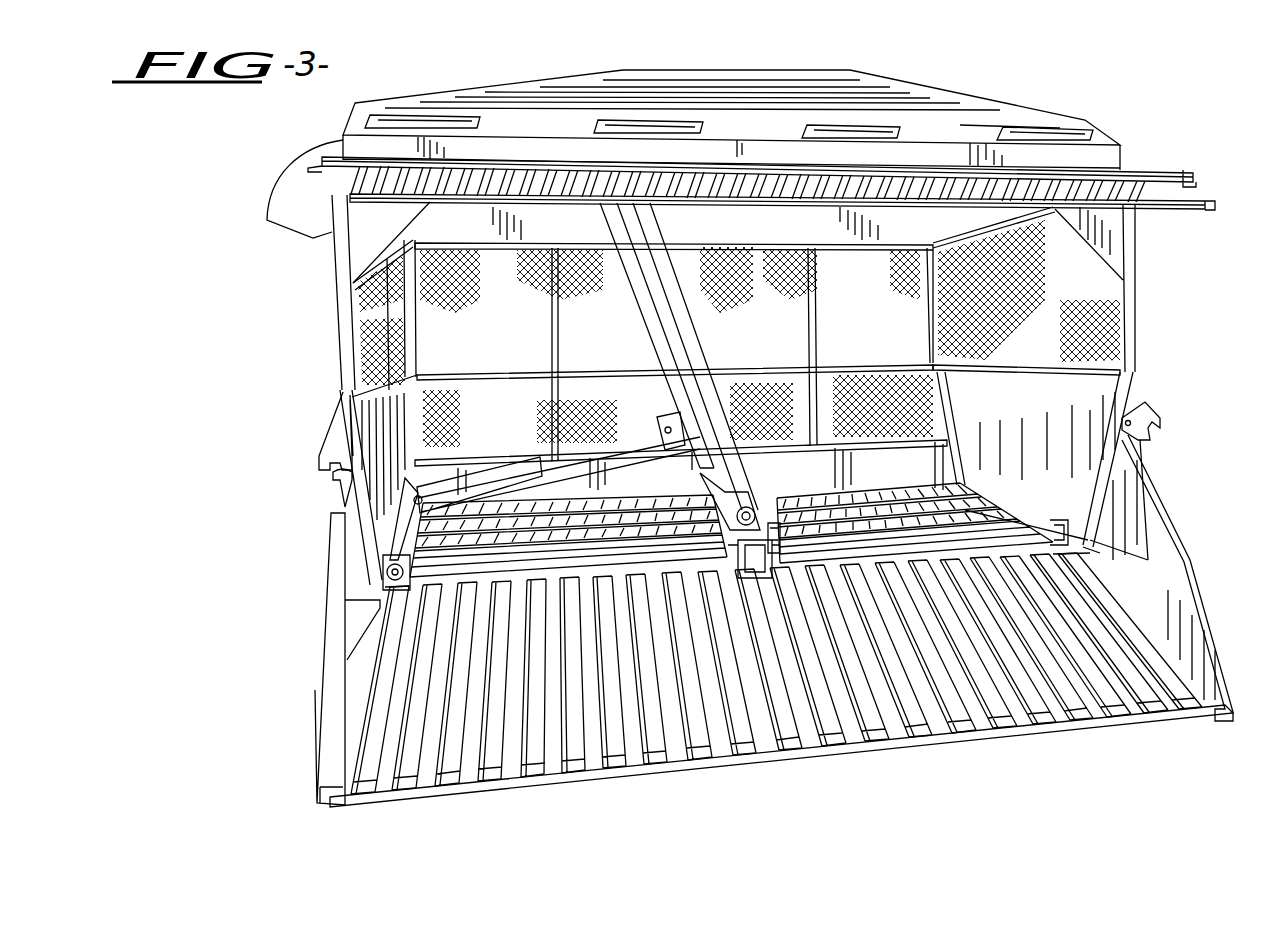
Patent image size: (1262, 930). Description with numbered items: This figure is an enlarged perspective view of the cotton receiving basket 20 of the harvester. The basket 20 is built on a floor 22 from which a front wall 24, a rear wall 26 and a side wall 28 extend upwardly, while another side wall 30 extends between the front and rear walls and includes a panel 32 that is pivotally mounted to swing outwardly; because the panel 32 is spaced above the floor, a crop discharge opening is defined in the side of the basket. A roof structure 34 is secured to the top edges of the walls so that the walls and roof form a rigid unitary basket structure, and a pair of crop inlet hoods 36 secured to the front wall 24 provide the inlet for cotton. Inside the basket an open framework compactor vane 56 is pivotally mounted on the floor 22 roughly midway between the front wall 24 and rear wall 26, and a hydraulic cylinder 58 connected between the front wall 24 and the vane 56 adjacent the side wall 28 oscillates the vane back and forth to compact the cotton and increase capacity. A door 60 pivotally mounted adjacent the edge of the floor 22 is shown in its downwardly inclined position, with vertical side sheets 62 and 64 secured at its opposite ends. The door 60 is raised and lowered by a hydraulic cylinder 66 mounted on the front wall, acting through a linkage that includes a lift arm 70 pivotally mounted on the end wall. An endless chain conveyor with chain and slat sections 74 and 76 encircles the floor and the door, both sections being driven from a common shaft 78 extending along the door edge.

The cotton receiving basket 20 is at (1156, 332).
The floor 22 is at (1014, 525).
The front wall 24 is at (356, 345).
The rear wall 26 is at (992, 409).
The side wall 28 is at (750, 344).
The side wall 30 is at (1097, 162).
The panel 32 is at (1197, 177).
The roof structure 34 is at (898, 104).
The crop inlet hoods 36 is at (283, 204).
The compactor vane 56 is at (637, 327).
The hydraulic cylinder 58 is at (513, 470).
The door 60 is at (947, 683).
The vertical side sheet 62 is at (322, 650).
The vertical side sheet 64 is at (1195, 573).
The hydraulic cylinder 66 is at (333, 505).
The lift arm 70 is at (330, 445).
The chain and slat conveyor section 74 is at (588, 507).
The chain and slat conveyor section 76 is at (845, 492).
The common shaft 78 is at (752, 548).